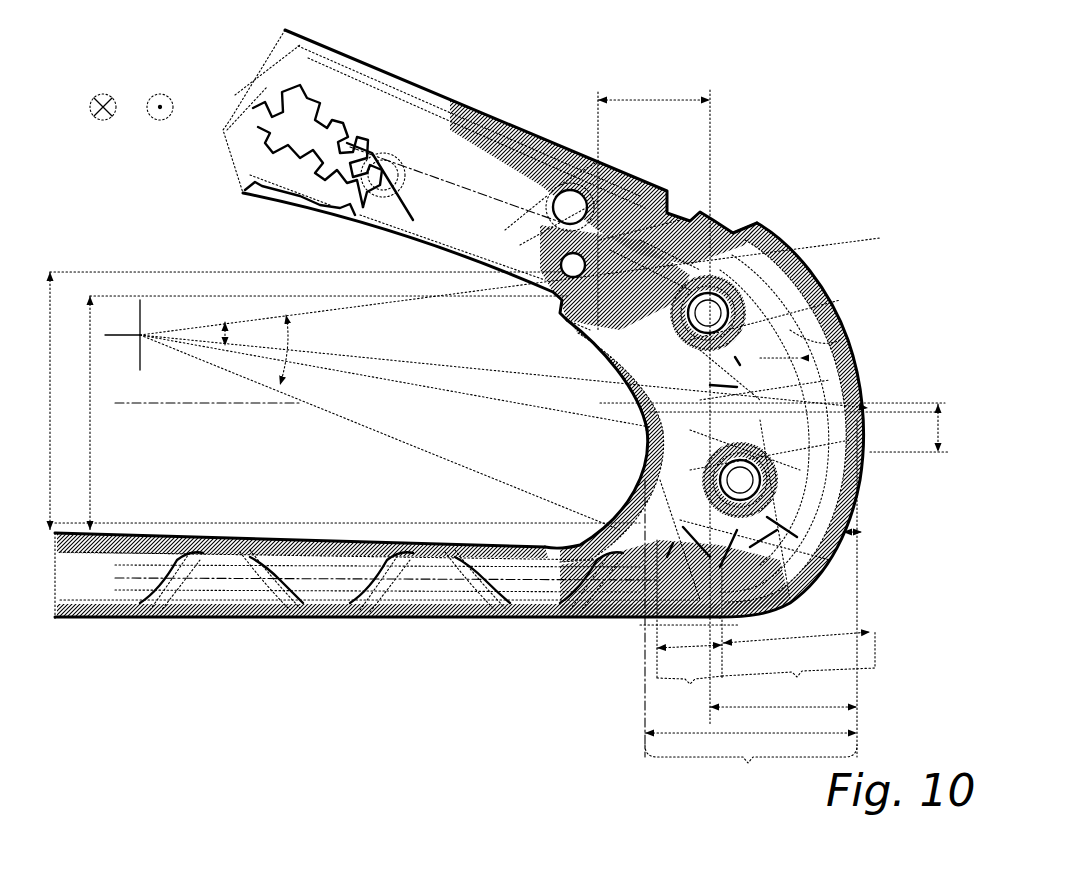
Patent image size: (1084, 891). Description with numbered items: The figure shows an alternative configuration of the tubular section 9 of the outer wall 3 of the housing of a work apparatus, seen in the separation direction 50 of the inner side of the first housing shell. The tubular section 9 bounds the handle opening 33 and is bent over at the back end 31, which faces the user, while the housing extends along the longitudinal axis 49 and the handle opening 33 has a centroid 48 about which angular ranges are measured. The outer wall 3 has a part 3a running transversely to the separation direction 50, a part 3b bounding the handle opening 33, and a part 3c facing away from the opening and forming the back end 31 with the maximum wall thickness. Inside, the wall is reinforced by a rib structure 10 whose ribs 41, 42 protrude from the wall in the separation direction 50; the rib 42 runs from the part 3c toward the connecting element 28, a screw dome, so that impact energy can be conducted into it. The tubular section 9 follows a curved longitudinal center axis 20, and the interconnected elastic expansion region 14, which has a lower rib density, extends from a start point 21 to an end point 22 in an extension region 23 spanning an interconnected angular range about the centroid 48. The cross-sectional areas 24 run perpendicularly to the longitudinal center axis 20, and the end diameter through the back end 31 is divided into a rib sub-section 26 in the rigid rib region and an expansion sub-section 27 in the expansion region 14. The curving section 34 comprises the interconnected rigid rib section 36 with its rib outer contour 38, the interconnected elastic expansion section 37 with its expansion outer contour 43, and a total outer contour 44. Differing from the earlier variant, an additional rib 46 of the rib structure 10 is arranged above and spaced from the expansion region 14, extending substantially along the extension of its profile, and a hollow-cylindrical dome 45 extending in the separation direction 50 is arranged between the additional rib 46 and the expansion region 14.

The outer wall 3 is at (737, 420).
The part of the housing wall running transversely with respect to the separation dir 3a is at (645, 462).
The part of the outer wall 3b is at (635, 385).
The part of the outer wall 3c is at (845, 505).
The tubular section 9 is at (838, 345).
The rib structure 10 is at (747, 605).
The interconnected elastic expansion region 14 is at (590, 325).
The longitudinal center axis 20 is at (150, 582).
The start point 21 is at (560, 305).
The end point 22 is at (605, 522).
The extension region 23 is at (300, 335).
The cross-sectional areas 24 is at (525, 371).
The rib sub-section 26 is at (798, 665).
The expansion sub-section 27 is at (689, 622).
The connecting element 28 is at (792, 320).
The back end 31 is at (870, 402).
The handle opening 33 is at (350, 498).
The curving section 34 is at (751, 606).
The interconnected rigid rib section 36 is at (733, 233).
The interconnected elastic expansion section 37 is at (650, 204).
The rib outer contour 38 is at (708, 313).
The rib 41 is at (840, 350).
The rib 42 is at (858, 482).
The expansion outer contour 43 is at (660, 225).
The total outer contour 44 is at (763, 232).
The dome 45 is at (467, 258).
The additional rib 46 is at (540, 150).
The centroid 48 is at (135, 345).
The longitudinal axis 49 is at (925, 403).
The separation direction 50 is at (108, 120).